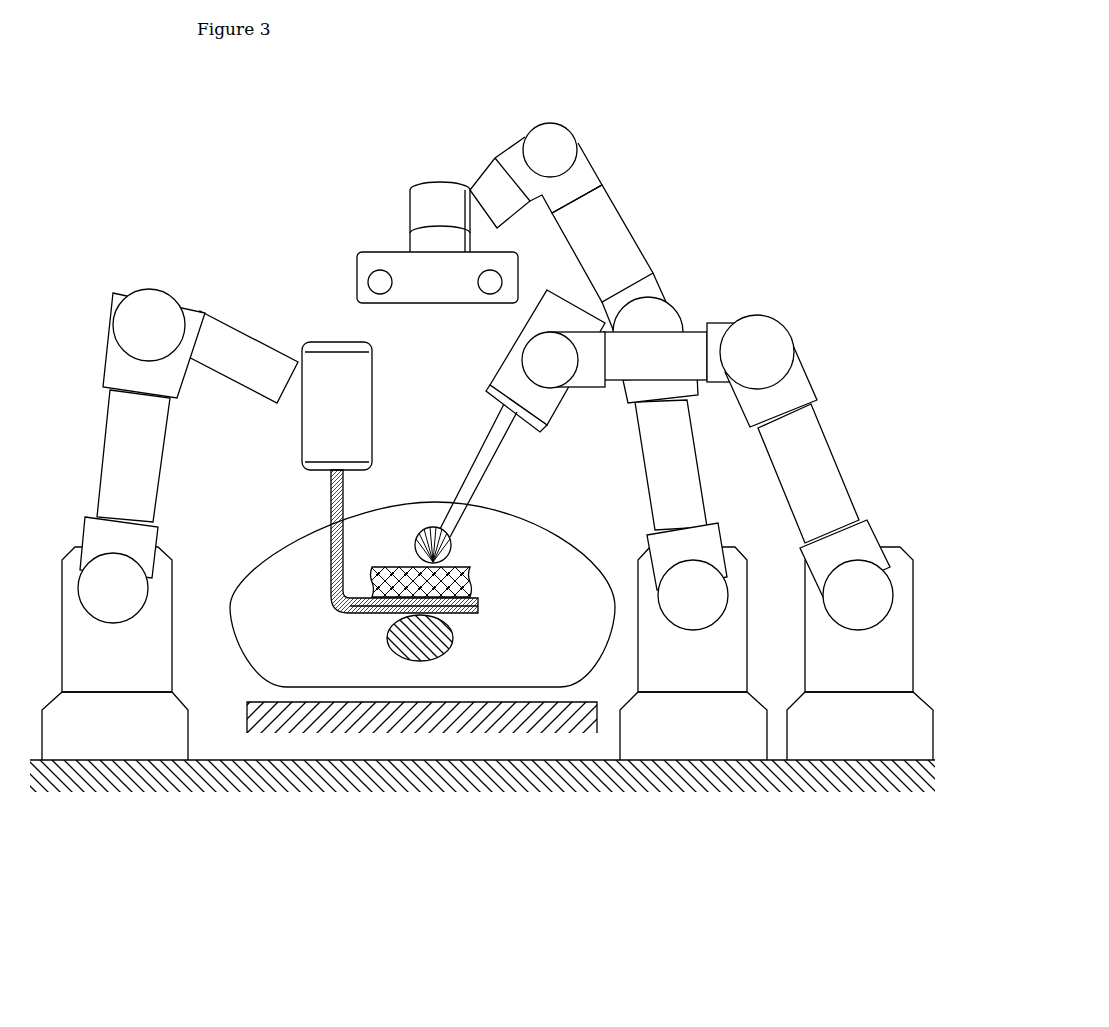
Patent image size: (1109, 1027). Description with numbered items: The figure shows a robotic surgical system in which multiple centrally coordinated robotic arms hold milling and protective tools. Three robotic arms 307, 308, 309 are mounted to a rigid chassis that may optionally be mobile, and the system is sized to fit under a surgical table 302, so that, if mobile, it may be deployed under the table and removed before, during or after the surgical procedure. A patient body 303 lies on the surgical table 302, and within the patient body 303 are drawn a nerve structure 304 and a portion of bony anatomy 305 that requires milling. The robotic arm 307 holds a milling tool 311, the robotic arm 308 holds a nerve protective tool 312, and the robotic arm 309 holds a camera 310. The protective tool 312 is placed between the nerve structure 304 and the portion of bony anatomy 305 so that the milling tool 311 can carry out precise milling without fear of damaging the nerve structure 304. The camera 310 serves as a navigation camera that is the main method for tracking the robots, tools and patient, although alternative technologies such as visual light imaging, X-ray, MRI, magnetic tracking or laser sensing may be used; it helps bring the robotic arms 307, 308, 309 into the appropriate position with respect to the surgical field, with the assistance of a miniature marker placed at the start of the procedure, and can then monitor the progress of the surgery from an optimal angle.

The surgical table 302 is at (420, 703).
The patient body 303 is at (553, 688).
The nerve structure 304 is at (455, 638).
The portion of bony anatomy 305 is at (470, 577).
The robotic arm 307 is at (835, 463).
The robotic arm 308 is at (243, 337).
The robotic arm 309 is at (623, 233).
The camera 310 is at (378, 252).
The milling tool 311 is at (497, 462).
The nerve protective tool 312 is at (330, 502).